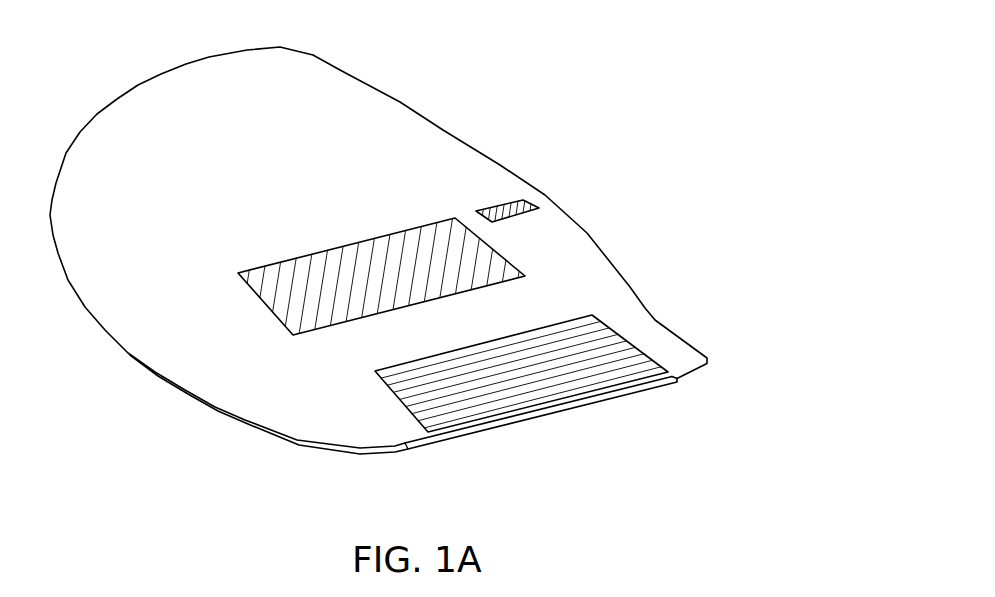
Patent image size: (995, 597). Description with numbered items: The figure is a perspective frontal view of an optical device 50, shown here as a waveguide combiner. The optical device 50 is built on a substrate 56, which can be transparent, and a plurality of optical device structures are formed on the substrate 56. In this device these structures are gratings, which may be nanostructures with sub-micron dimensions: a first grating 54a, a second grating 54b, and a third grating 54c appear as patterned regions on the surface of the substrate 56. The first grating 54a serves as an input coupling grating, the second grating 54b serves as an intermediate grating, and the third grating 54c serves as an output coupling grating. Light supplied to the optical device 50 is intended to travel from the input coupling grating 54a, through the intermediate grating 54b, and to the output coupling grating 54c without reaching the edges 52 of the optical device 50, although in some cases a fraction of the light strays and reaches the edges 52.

The optical device 50 is at (440, 63).
The edges 52 is at (408, 447).
The first grating 54a is at (530, 207).
The second grating 54b is at (515, 365).
The third grating 54c is at (348, 258).
The substrate 56 is at (580, 250).